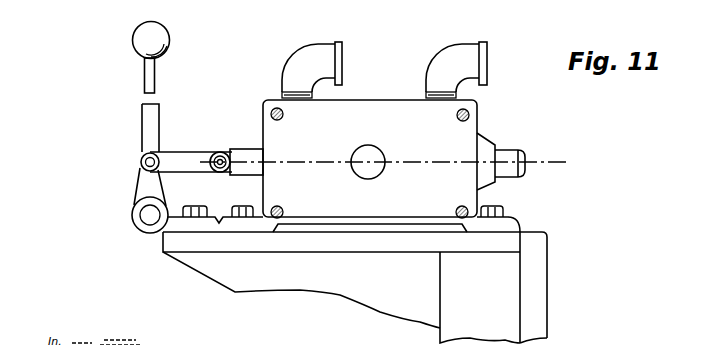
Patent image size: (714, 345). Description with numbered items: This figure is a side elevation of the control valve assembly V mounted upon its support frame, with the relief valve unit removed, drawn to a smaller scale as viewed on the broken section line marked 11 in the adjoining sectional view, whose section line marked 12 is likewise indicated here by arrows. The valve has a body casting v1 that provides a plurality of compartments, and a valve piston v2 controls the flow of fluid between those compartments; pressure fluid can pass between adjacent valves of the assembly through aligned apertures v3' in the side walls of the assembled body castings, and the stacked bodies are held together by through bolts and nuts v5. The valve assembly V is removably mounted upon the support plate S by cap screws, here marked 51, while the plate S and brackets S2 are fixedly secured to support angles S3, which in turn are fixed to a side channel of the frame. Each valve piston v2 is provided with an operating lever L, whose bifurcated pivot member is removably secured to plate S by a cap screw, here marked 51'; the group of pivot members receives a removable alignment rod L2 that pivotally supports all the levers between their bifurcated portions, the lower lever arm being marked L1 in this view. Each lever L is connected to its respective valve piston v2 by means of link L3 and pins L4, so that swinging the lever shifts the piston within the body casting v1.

The operating lever L is at (156, 72).
The lever arm L1 is at (135, 203).
The alignment rod L2 is at (147, 215).
The link L3 is at (177, 157).
The pins L4 is at (142, 162).
The valve assembly V is at (493, 107).
The body casting v1 is at (358, 108).
The valve piston v2 is at (245, 149).
The aligned apertures v3' is at (390, 157).
The through bolts and nuts v5 is at (477, 197).
The section line 12- 12 is at (205, 153).
The clamp 51 is at (526, 215).
The clamp 51' is at (215, 200).
The support plate S is at (172, 238).
The brackets S2 is at (232, 270).
The support angles S3 is at (535, 320).
The section line 11 is at (400, 343).